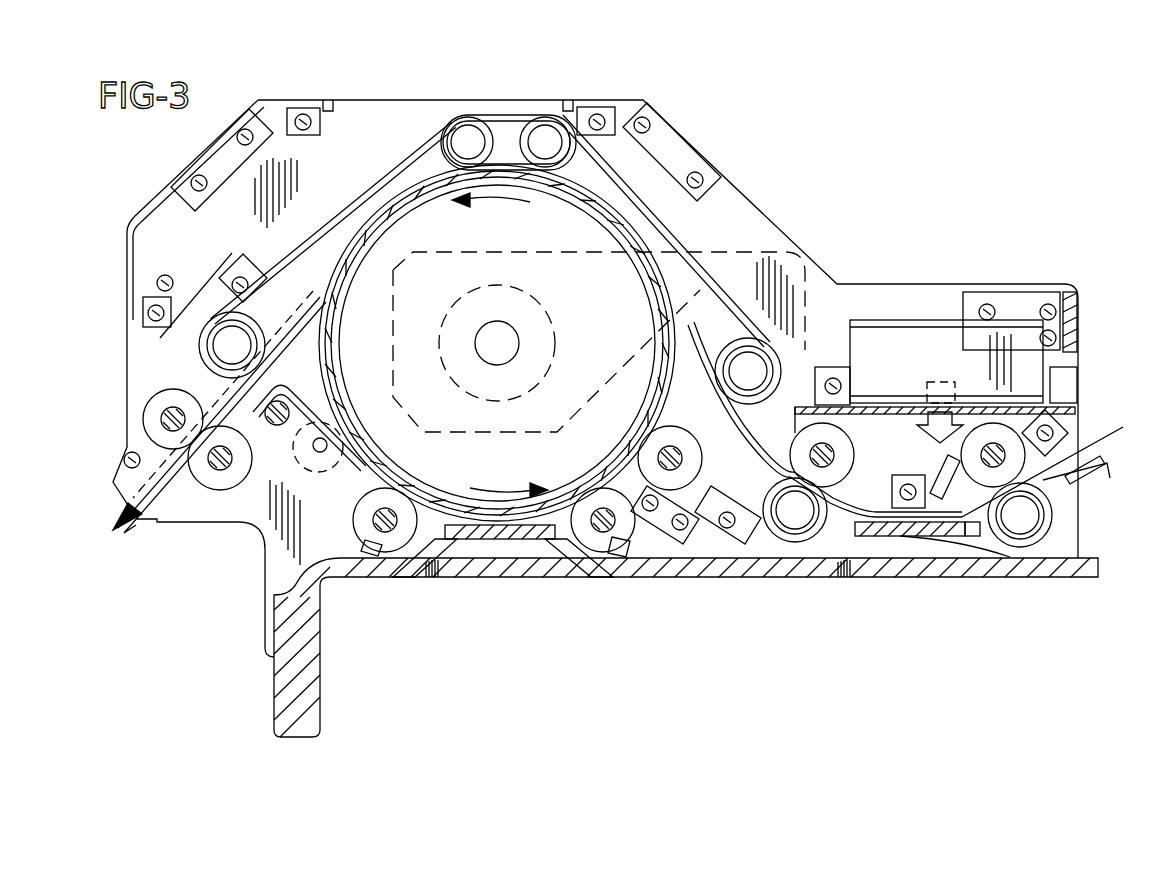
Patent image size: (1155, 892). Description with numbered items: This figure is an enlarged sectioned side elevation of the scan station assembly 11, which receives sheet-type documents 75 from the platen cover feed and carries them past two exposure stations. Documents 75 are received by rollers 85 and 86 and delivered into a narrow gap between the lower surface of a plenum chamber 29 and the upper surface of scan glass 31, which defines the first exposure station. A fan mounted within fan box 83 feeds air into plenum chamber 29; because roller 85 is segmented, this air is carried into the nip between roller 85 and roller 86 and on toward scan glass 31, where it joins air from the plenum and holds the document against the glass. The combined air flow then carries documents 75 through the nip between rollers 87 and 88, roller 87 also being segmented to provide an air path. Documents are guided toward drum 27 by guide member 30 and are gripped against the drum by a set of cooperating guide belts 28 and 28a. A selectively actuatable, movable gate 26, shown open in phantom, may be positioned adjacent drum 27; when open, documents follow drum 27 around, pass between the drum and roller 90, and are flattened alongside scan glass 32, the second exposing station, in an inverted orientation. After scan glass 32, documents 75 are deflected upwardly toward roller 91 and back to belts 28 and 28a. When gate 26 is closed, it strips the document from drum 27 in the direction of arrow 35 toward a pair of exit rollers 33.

The scan station assembly 11 is at (780, 165).
The movable gate 26 is at (305, 320).
The drum 27 is at (386, 460).
The guide belt 28 is at (394, 153).
The guide belt 28a is at (650, 205).
The plenum chamber 29 is at (908, 433).
The guide member 30 is at (658, 400).
The scan glass 31 is at (917, 540).
The scan glass 32 is at (492, 545).
The exit rollers 33 is at (150, 420).
The arrow 35 is at (213, 383).
The documents 75 is at (665, 365).
The fan box 83 is at (947, 337).
The roller 85 is at (987, 427).
The roller 86 is at (1053, 517).
The roller 87 is at (850, 433).
The roller 88 is at (790, 542).
The roller 90 is at (358, 506).
The roller 91 is at (603, 533).